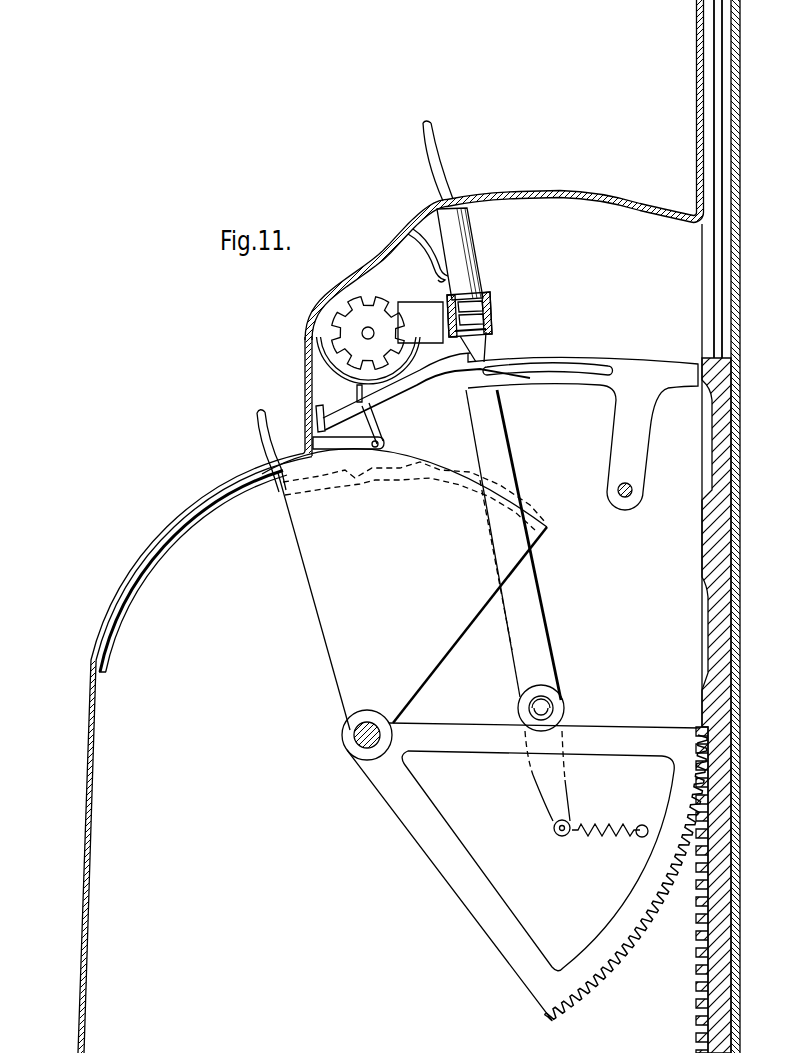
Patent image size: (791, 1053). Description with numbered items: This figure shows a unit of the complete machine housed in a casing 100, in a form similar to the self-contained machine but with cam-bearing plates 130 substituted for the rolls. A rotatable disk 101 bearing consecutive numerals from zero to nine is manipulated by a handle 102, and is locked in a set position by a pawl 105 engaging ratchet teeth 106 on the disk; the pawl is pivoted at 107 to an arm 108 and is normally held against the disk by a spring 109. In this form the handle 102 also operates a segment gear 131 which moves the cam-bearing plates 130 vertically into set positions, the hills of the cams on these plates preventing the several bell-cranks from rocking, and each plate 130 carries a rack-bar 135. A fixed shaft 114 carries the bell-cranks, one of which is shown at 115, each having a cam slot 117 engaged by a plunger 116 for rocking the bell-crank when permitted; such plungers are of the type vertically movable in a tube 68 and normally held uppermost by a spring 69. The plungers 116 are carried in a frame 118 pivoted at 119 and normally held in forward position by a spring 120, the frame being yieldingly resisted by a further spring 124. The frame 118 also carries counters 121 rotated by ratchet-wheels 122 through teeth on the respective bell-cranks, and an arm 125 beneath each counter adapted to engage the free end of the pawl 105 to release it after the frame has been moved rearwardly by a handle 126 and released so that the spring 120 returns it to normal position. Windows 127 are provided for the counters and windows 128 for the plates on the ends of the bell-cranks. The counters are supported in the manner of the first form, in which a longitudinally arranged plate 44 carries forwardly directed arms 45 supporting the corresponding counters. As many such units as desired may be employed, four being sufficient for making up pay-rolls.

The longitudinally arranged plate 44 is at (489, 293).
The forwardly directed arms 45 is at (420, 322).
The tube 68 is at (478, 254).
The spring 69 is at (491, 311).
The casing 100 is at (85, 784).
The rotatable disk 101 is at (327, 633).
The handle 102 is at (255, 433).
The pawl 105 is at (380, 431).
The ratchet teeth 106 is at (424, 474).
The pivot 107 is at (379, 445).
The arm 108 is at (322, 448).
The spring 109 is at (322, 368).
The fixed shaft 114 is at (633, 490).
The bell-crank 115 is at (620, 368).
The plungers 116 is at (480, 342).
The cam slots 117 is at (555, 363).
The frame 118 is at (544, 630).
The pivot 119 is at (549, 706).
The spring 120 is at (604, 840).
The counters 121 is at (380, 277).
The ratchet-wheels 122 is at (382, 305).
The spring 124 is at (410, 240).
The arm 125 is at (410, 372).
The handle 126 is at (448, 173).
The windows 127 is at (345, 291).
The windows 128 is at (308, 396).
The cam-bearing plates 130 is at (702, 553).
The segment gear 131 is at (627, 940).
The rack-bar 135 is at (697, 975).